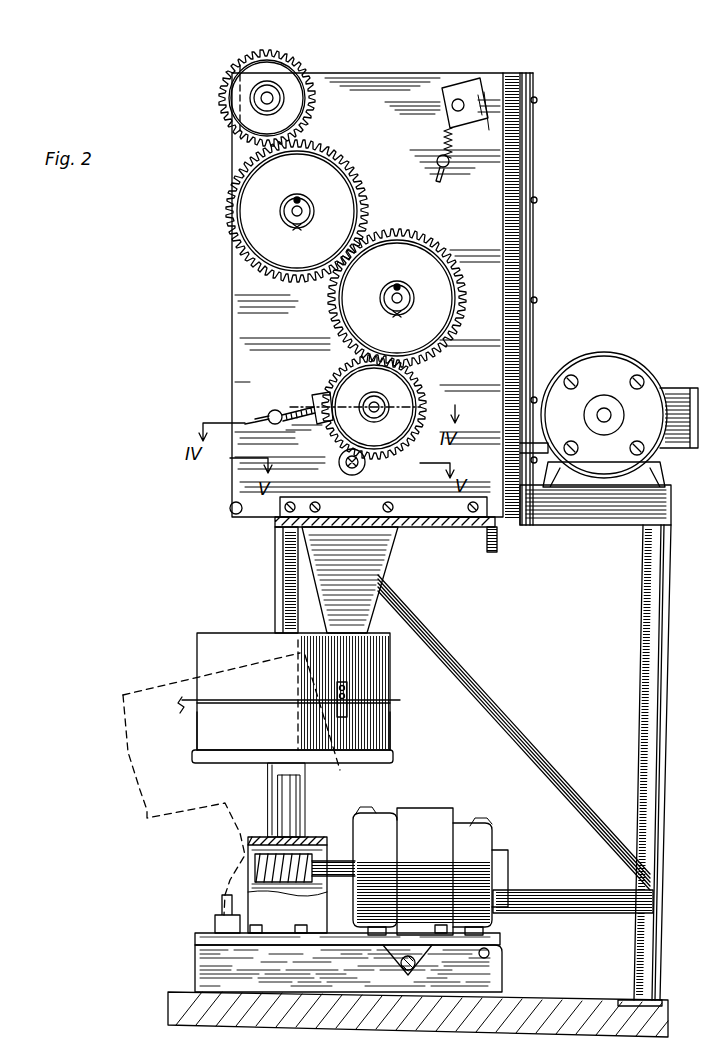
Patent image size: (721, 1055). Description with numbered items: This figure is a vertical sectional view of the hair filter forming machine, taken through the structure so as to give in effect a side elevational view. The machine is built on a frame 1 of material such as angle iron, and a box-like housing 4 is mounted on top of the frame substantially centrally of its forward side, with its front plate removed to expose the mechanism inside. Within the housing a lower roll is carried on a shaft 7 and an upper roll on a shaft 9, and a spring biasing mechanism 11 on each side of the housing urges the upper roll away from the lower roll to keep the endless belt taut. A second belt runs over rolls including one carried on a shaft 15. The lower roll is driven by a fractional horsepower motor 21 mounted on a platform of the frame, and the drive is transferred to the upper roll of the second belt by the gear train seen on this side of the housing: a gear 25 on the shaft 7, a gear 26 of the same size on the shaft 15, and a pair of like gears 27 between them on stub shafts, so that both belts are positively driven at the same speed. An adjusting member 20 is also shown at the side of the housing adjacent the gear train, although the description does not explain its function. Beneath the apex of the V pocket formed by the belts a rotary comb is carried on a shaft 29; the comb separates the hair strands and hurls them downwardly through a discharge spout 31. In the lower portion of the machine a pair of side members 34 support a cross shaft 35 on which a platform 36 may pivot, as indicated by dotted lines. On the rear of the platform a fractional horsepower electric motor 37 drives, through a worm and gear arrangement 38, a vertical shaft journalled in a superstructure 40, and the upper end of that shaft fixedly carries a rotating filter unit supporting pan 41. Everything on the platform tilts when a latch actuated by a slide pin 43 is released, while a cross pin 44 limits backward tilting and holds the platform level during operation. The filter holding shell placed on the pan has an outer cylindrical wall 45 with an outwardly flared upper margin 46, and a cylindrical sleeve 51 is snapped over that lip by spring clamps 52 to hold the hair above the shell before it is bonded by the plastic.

The frame 1 is at (642, 735).
The box-like housing 4 is at (495, 178).
The shaft 7 is at (378, 406).
The shaft 9 is at (461, 104).
The spring biasing mechanism 11 is at (440, 141).
The shaft 15 is at (268, 98).
The lever 20 is at (296, 412).
The fractional horsepower motor 21 is at (612, 368).
The gear 25 is at (356, 380).
The gear 26 is at (268, 78).
The pair of like gears 27 is at (385, 258).
The shaft 29 is at (348, 466).
The discharge spout 31 is at (400, 576).
The side members 34 is at (490, 986).
The cross shaft 35 is at (405, 972).
The platform 36 is at (232, 990).
The fractional horsepower electric motor 37 is at (437, 826).
The worm and gear arrangement 38 is at (255, 866).
The superstructure 40 is at (255, 850).
The filter unit supporting pan 41 is at (394, 758).
The slide pin 43 is at (224, 904).
The cross pin 44 is at (490, 953).
The outer cylindrical wall 45 is at (210, 730).
The outwardly flared upper margin 46 is at (400, 703).
The cylindrical sleeve 51 is at (215, 647).
The spring clamps 52 is at (183, 697).